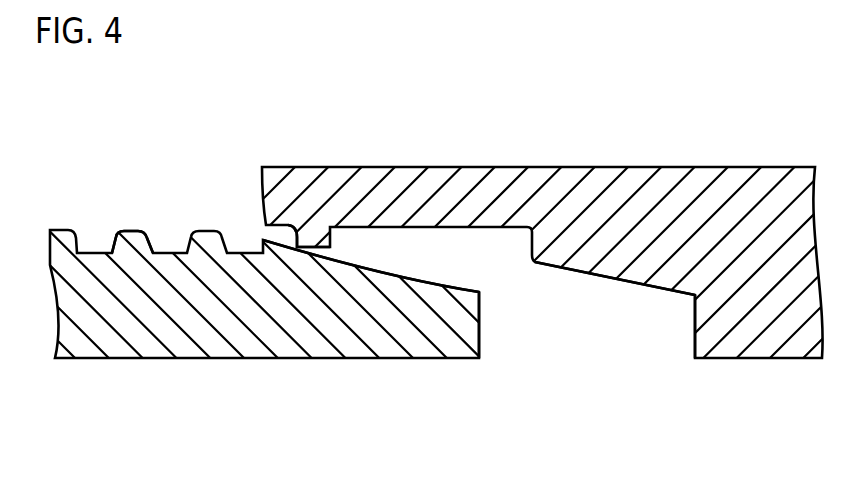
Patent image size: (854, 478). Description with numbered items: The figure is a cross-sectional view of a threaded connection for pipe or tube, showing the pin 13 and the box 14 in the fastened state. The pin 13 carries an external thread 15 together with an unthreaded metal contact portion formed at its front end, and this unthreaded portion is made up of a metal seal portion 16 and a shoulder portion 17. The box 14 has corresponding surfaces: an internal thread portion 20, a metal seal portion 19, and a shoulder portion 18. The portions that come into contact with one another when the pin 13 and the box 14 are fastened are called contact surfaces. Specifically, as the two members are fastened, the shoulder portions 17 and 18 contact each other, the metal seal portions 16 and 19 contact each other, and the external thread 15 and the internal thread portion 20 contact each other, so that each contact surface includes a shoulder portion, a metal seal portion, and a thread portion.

The pin 13 is at (245, 377).
The box 14 is at (652, 162).
The external thread 15 is at (132, 229).
The metal seal portion 16 is at (383, 273).
The shoulder portion 17 is at (480, 317).
The shoulder portion 18 is at (695, 317).
The metal seal portion 19 is at (602, 278).
The internal thread portion 20 is at (294, 226).